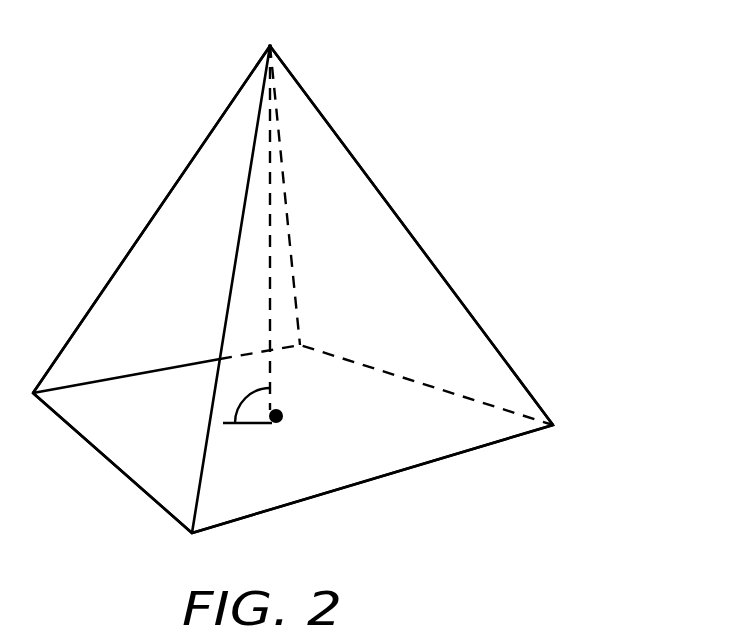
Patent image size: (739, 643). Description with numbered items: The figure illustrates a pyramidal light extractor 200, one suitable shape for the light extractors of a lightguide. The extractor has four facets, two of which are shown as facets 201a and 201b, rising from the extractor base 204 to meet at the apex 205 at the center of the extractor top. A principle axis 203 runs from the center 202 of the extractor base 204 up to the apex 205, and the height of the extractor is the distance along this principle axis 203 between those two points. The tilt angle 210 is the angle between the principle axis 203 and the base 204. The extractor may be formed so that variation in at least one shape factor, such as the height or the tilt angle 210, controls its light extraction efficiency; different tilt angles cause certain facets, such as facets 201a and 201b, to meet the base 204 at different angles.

The light extractor 200 is at (405, 82).
The facet 201a is at (148, 252).
The facet 201b is at (435, 292).
The center of the extractor base 202 is at (282, 421).
The principle axis 203 is at (270, 368).
The extractor base 204 is at (250, 500).
The apex 205 is at (270, 46).
The tilt angle 210 is at (240, 407).